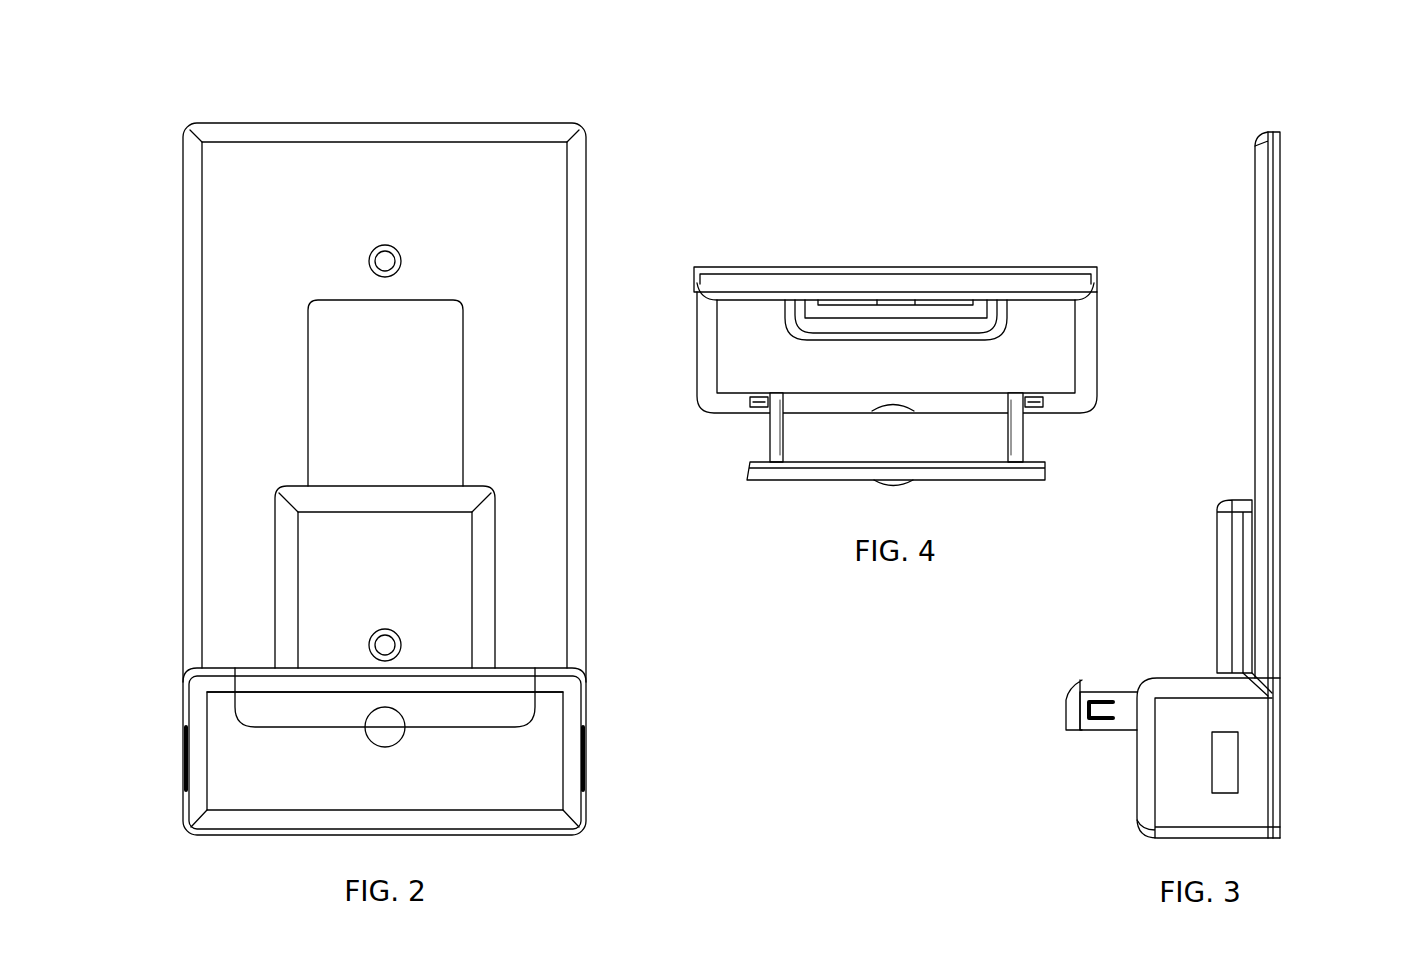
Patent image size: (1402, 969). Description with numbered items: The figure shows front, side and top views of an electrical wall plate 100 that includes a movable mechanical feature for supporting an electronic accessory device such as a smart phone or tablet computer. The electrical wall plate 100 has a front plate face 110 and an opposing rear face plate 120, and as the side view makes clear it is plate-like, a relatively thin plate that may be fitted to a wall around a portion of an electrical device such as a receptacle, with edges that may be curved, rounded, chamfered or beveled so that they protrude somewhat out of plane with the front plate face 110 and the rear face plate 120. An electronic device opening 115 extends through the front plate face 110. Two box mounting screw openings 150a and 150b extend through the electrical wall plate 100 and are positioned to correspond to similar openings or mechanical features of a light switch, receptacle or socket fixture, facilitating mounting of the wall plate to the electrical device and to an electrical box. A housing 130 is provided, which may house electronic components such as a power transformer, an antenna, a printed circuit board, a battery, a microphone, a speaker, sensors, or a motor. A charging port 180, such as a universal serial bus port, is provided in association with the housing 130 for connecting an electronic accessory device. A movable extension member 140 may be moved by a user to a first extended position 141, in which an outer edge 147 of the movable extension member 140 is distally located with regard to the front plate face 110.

In FIG. 2, the electrical wall plate 100 is at (402, 99).
In FIG. 4, the electrical wall plate 100 is at (864, 223).
In FIG. 3, the electrical wall plate 100 is at (1240, 113).
In FIG. 2, the front plate face 110 is at (230, 254).
In FIG. 4, the front plate face 110 is at (1078, 300).
In FIG. 3, the front plate face 110 is at (1255, 212).
In FIG. 2, the electronic device opening 115 is at (350, 362).
In FIG. 4, the rear face plate 120 is at (736, 266).
In FIG. 3, the rear face plate 120 is at (1281, 178).
In FIG. 2, the housing 130 is at (573, 770).
In FIG. 4, the housing 130 is at (750, 372).
In FIG. 3, the housing 130 is at (1185, 678).
In FIG. 2, the movable extension member 140 is at (548, 703).
In FIG. 4, the movable extension member 140 is at (760, 497).
In FIG. 3, the movable extension member 140 is at (1052, 708).
In FIG. 4, the first extended position 141 is at (1066, 463).
In FIG. 3, the first extended position 141 is at (1052, 730).
In FIG. 2, the outer edge 147 is at (510, 715).
In FIG. 4, the outer edge 147 is at (985, 492).
In FIG. 3, the outer edge 147 is at (1068, 690).
In FIG. 2, the box mounting screw opening 150a is at (373, 254).
In FIG. 2, the box mounting screw opening 150b is at (373, 639).
In FIG. 3, the charging port 180 is at (1214, 774).